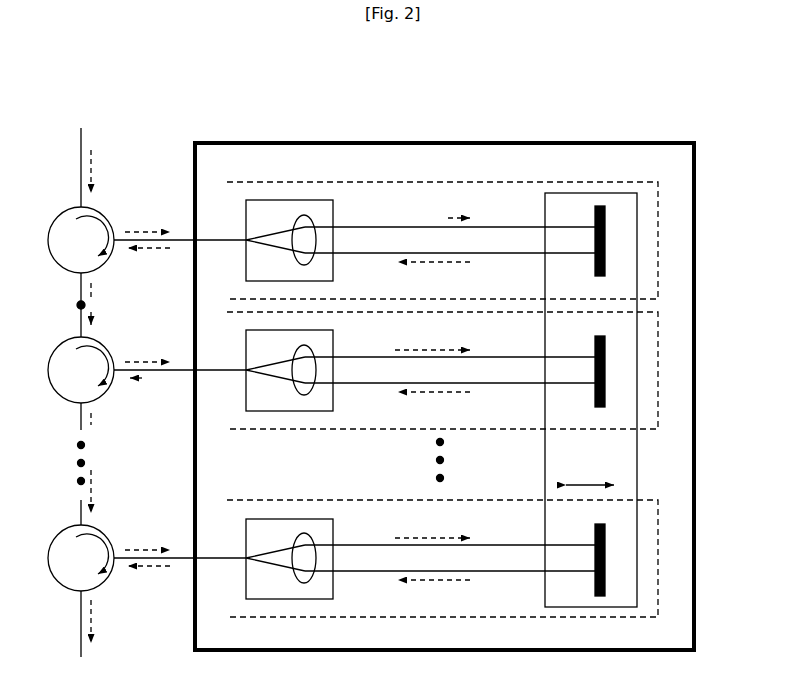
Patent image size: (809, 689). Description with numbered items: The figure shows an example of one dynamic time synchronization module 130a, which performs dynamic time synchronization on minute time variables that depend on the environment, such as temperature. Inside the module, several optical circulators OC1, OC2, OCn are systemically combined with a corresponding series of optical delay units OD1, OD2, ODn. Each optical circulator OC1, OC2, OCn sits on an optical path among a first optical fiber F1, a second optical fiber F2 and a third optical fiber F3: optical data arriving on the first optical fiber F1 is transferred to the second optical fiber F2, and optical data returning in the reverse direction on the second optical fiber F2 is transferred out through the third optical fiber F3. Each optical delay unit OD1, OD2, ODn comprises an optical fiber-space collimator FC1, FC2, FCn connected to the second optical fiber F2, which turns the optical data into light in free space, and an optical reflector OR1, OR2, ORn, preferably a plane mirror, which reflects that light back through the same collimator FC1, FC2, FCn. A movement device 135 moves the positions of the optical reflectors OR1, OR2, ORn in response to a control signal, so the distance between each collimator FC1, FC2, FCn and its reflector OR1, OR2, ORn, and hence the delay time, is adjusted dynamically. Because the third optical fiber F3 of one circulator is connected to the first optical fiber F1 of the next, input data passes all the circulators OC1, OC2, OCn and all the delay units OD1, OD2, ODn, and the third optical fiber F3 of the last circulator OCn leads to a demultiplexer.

The dynamic time synchronization module 130a is at (530, 58).
The optical circulator OC1 is at (63, 214).
The optical circulator OC2 is at (62, 344).
The optical circulator OCn is at (62, 532).
The first optical fiber F1 is at (84, 198).
The second optical fiber F2 is at (124, 240).
The third optical fiber F3 is at (86, 282).
The optical fiber-space collimator FC1 is at (290, 200).
The optical fiber-space collimator FC2 is at (289, 411).
The optical fiber-space collimator FCn is at (288, 600).
The optical reflector OR1 is at (598, 205).
The optical reflector OR2 is at (598, 408).
The optical reflector ORn is at (598, 598).
The optical delay unit OD1 is at (658, 240).
The optical delay unit OD2 is at (658, 370).
The optical delay unit ODn is at (658, 558).
The movement device 135 is at (640, 466).